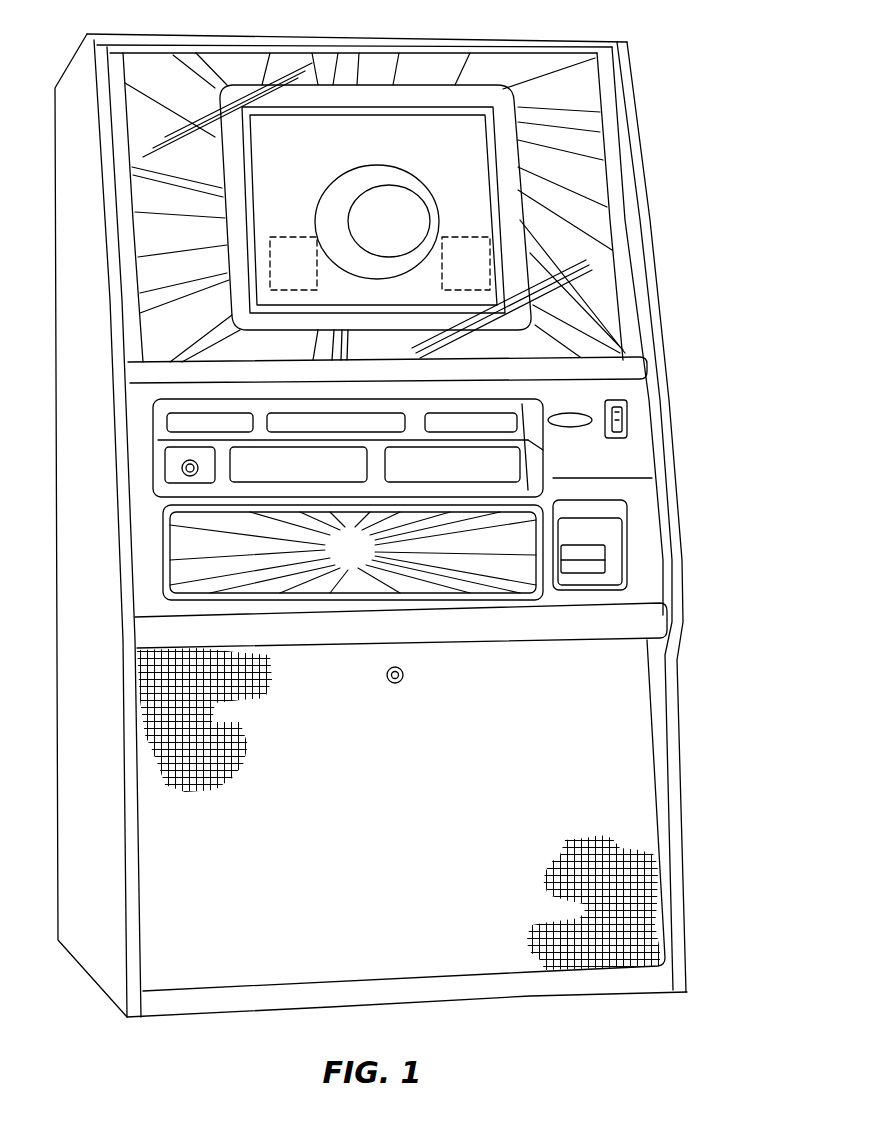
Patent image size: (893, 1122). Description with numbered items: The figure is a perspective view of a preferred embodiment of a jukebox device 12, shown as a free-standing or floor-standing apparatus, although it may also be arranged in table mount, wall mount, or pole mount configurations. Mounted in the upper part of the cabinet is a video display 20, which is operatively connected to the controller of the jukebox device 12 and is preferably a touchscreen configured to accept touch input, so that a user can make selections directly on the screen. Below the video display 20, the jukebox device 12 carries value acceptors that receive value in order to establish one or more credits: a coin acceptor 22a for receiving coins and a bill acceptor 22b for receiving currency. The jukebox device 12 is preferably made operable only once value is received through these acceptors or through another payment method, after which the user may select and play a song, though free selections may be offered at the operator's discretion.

The jukebox device 12 is at (668, 61).
The video display 20 is at (583, 175).
The coin acceptor 22a is at (627, 418).
The bill acceptor 22b is at (600, 553).